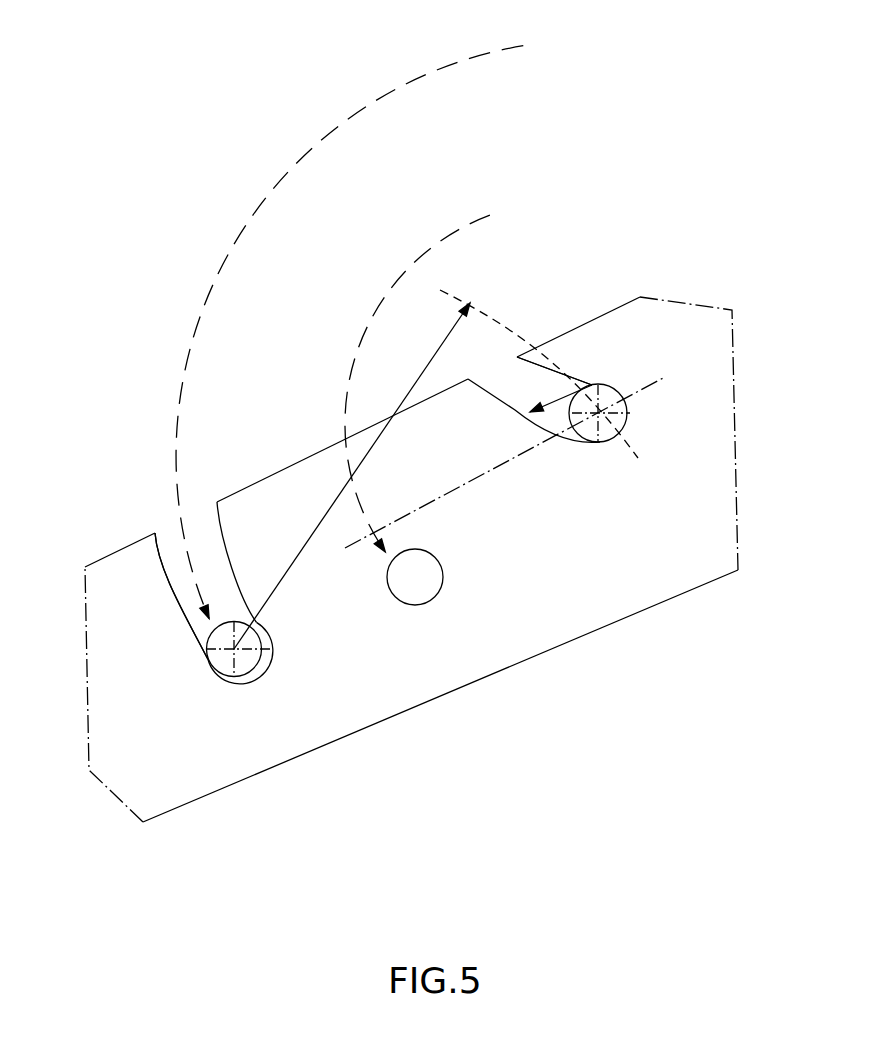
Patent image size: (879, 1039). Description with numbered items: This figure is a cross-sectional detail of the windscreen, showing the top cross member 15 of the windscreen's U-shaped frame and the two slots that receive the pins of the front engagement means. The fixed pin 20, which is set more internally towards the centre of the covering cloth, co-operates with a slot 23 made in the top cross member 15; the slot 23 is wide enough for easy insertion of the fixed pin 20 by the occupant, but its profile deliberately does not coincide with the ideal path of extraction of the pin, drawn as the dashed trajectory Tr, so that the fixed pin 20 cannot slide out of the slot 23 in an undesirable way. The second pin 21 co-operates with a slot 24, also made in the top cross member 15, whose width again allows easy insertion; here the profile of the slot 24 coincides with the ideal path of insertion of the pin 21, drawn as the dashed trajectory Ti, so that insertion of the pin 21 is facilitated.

The top cross member 15 is at (115, 573).
The fixed pin 20 is at (613, 443).
The pin 21 is at (220, 667).
The slot 23 is at (570, 378).
The slot 24 is at (188, 618).
The ideal path of insertion Ti is at (265, 202).
The ideal path of extraction Tr is at (498, 316).